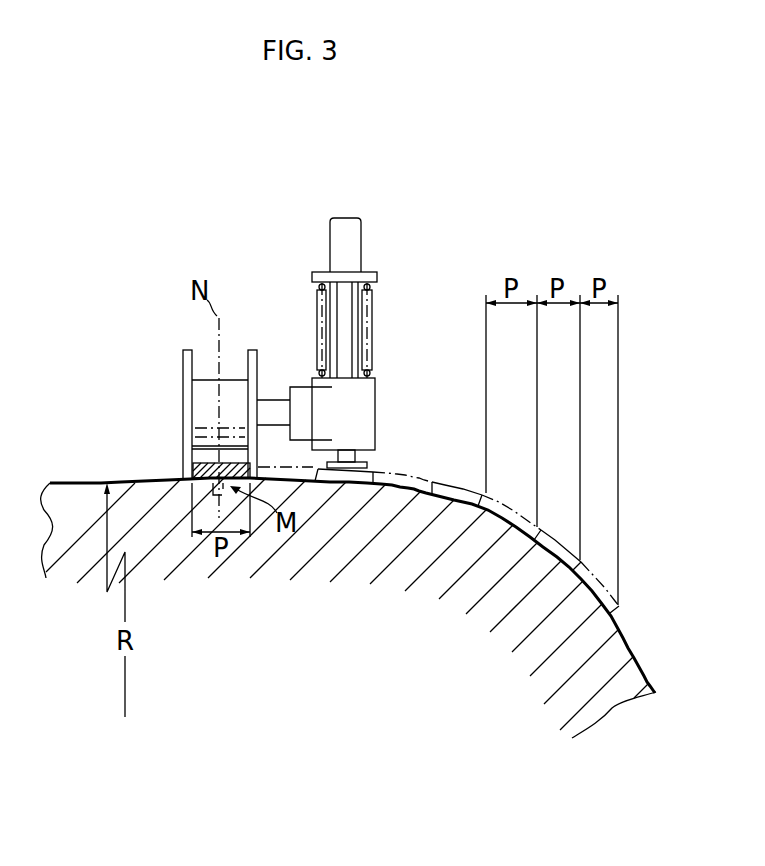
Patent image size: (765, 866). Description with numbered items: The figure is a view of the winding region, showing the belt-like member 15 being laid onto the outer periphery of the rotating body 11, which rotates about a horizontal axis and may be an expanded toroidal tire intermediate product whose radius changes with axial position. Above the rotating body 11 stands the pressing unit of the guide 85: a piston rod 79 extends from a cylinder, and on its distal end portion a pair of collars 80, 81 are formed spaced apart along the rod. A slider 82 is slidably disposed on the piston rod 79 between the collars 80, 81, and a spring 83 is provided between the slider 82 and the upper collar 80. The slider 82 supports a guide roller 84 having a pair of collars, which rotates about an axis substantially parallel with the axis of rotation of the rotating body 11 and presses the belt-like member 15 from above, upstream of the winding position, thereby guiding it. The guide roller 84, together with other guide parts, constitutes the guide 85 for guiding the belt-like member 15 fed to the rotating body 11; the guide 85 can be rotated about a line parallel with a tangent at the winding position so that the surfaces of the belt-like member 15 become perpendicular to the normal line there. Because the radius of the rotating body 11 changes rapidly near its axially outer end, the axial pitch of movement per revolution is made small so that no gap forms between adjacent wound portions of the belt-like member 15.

The rotating body 11 is at (612, 648).
The belt-like member 15 is at (193, 468).
The piston rod 79 is at (355, 232).
The upper collar 80 is at (377, 277).
The collar 81 is at (367, 462).
The slider 82 is at (368, 407).
The spring 83 is at (317, 291).
The guide roller 84 is at (183, 362).
The guide 85 is at (300, 226).